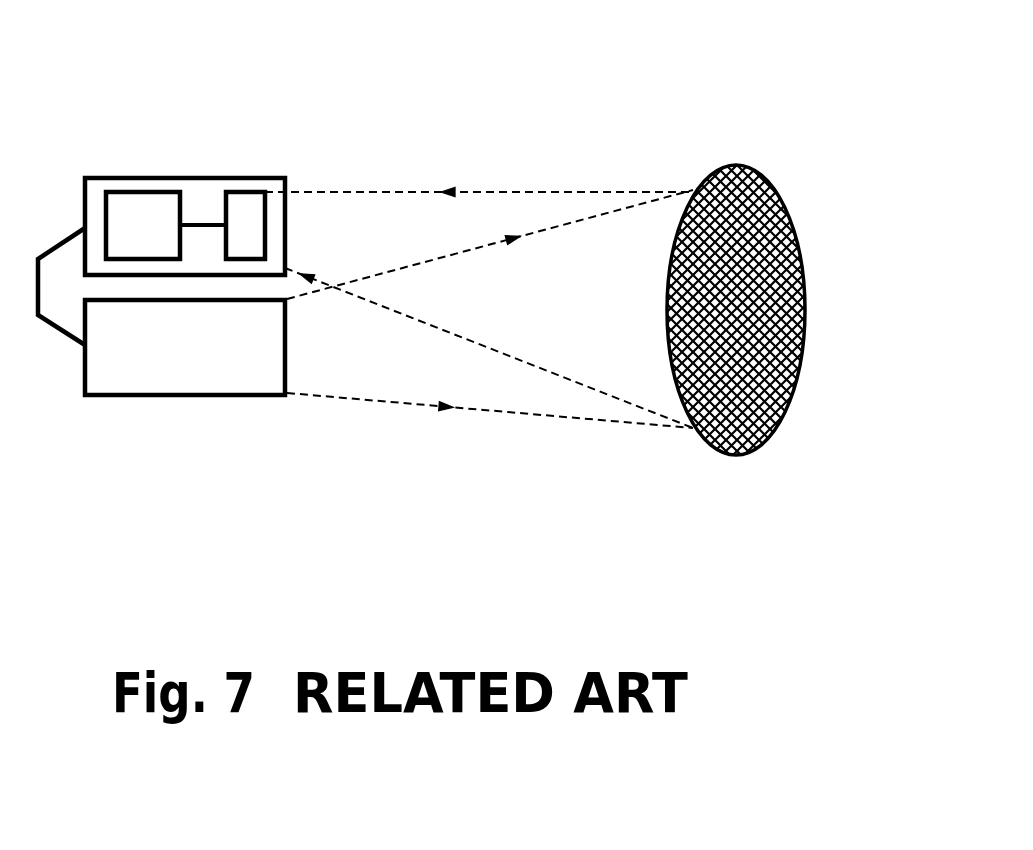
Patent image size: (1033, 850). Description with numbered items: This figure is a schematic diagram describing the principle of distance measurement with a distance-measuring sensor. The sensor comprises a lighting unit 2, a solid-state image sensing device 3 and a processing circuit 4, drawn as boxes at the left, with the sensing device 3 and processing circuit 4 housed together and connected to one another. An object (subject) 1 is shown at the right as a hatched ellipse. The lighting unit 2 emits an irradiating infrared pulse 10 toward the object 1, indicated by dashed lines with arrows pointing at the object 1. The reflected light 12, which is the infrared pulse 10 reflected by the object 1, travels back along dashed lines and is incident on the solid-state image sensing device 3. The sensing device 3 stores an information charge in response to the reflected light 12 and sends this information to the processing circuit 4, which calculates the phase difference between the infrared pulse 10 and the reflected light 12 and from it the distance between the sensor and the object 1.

The object (subject) 1 is at (753, 455).
The lighting unit 2 is at (173, 377).
The solid-state image sensing device 3 is at (248, 217).
The processing circuit 4 is at (123, 217).
The irradiating infrared pulse 10 is at (373, 387).
The reflected light 12 is at (533, 213).